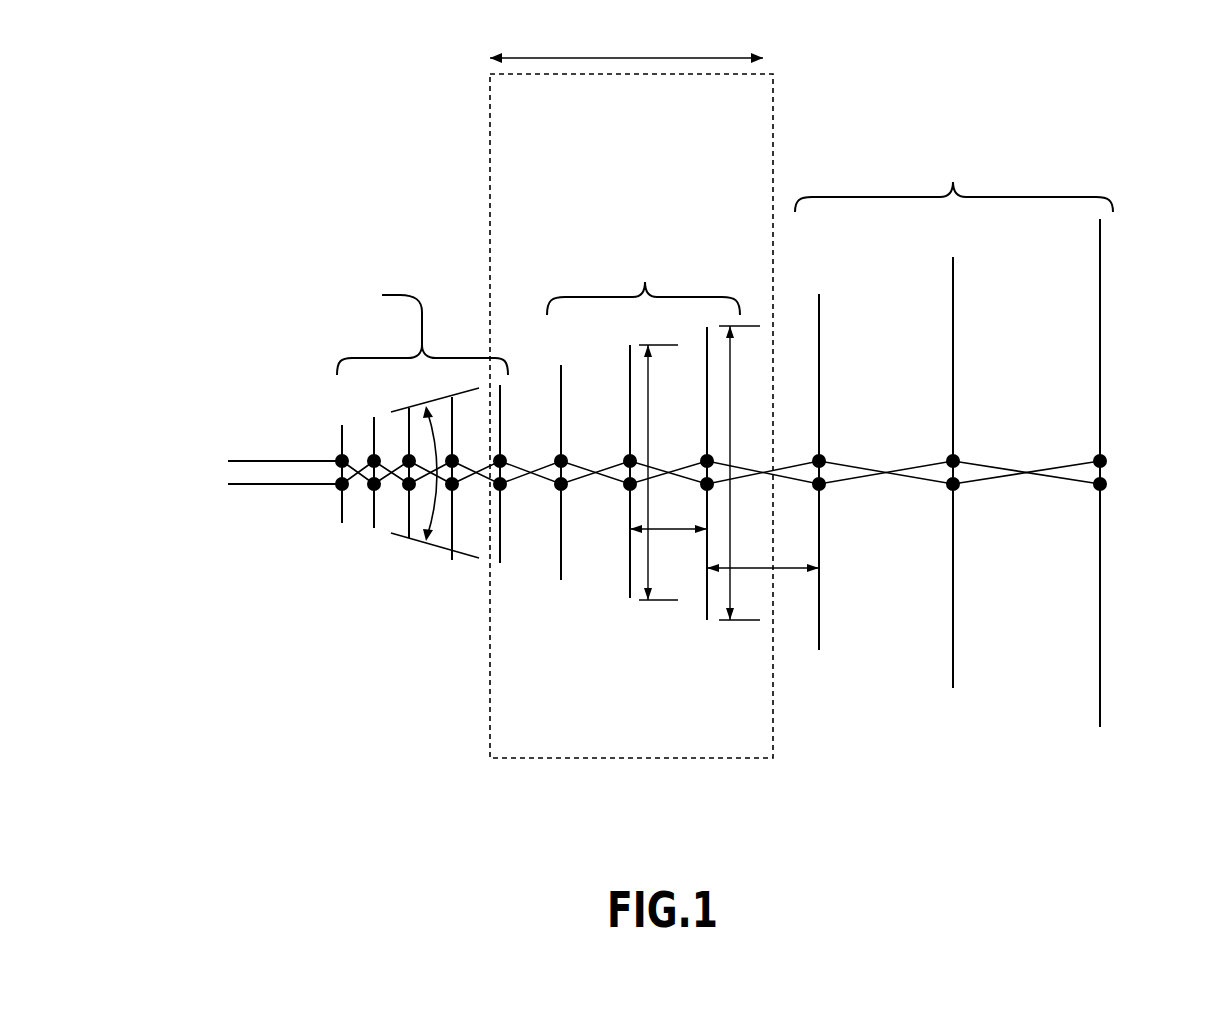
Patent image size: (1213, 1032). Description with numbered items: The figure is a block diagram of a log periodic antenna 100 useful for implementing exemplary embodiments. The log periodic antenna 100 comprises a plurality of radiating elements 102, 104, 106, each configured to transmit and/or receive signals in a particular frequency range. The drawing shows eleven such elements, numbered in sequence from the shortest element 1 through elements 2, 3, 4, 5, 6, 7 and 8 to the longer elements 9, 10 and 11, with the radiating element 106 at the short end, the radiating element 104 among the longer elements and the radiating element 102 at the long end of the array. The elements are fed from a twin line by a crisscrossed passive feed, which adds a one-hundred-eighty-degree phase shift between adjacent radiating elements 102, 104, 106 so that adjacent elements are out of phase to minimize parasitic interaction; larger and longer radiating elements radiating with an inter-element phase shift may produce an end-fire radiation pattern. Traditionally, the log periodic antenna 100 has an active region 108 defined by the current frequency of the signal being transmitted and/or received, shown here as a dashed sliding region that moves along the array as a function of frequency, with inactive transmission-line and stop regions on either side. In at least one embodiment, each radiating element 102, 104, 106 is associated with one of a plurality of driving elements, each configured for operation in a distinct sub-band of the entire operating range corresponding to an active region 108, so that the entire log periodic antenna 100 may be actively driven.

The log periodic antenna 100 is at (210, 52).
The radiating element 102 is at (1102, 252).
The radiating element 104 is at (955, 290).
The radiating element 106 is at (342, 440).
The active region 108 is at (490, 138).
The dipole element 1 is at (302, 482).
The dipole element 2 is at (374, 487).
The dipole element 3 is at (409, 487).
The dipole element 4 is at (452, 486).
The dipole element 5 is at (500, 485).
The dipole element 6 is at (561, 485).
The dipole element 7 is at (630, 485).
The dipole element 8 is at (707, 486).
The dipole element 9 is at (819, 486).
The dipole element 10 is at (990, 486).
The dipole element 11 is at (1138, 486).